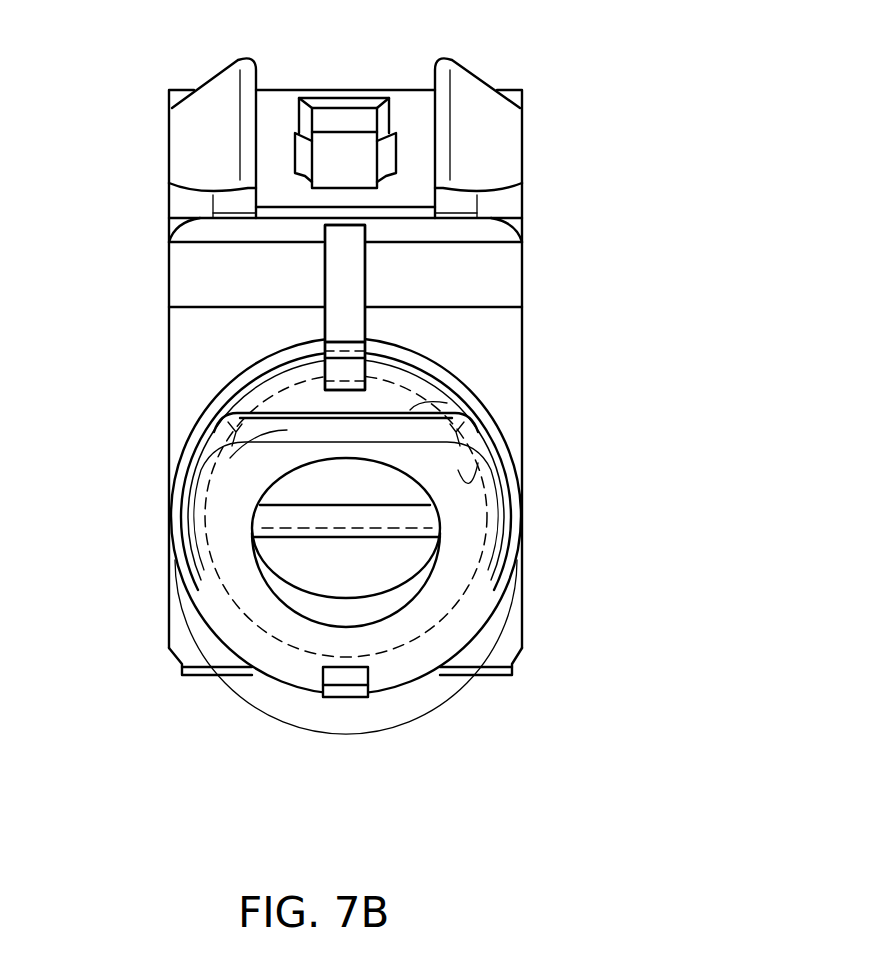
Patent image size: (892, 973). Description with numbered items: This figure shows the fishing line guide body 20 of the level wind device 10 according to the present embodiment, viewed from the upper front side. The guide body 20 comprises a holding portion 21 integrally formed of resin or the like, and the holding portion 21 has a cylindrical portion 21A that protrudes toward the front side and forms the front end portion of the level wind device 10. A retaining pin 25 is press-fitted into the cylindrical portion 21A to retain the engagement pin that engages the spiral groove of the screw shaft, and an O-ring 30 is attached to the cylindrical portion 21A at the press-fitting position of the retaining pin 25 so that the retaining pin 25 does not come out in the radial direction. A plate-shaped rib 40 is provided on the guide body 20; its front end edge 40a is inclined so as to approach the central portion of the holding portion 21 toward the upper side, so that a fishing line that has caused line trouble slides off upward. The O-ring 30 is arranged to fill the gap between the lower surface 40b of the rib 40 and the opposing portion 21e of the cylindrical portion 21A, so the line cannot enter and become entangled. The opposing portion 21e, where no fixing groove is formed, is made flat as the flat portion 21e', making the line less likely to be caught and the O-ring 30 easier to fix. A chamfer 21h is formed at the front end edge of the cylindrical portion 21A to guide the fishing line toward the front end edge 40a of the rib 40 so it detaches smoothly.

The level wind device 10 is at (596, 70).
The fishing line guide body 20 is at (550, 238).
The holding portion 21 is at (477, 330).
The opposing portion 21e is at (269, 380).
The flat portion 21e' is at (277, 479).
The chamfer 21h is at (287, 430).
The cylindrical portion 21A is at (458, 470).
The retaining pin 25 is at (358, 528).
The O-ring 30 is at (447, 403).
The rib 40 is at (345, 257).
The front end edge 40a is at (345, 290).
The lower surface 40b is at (350, 392).